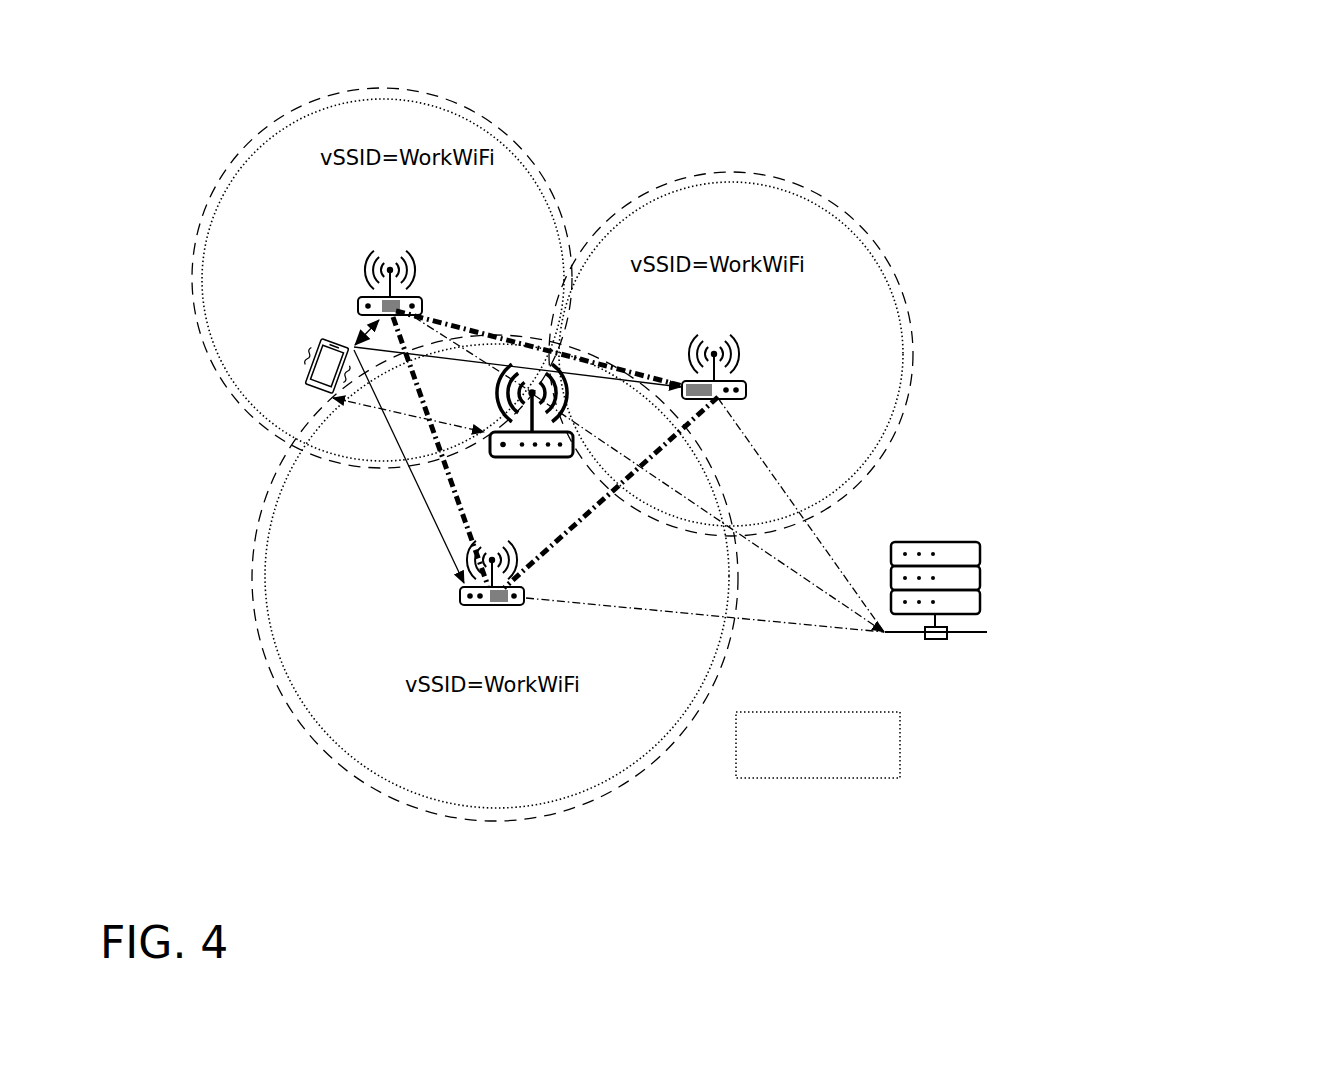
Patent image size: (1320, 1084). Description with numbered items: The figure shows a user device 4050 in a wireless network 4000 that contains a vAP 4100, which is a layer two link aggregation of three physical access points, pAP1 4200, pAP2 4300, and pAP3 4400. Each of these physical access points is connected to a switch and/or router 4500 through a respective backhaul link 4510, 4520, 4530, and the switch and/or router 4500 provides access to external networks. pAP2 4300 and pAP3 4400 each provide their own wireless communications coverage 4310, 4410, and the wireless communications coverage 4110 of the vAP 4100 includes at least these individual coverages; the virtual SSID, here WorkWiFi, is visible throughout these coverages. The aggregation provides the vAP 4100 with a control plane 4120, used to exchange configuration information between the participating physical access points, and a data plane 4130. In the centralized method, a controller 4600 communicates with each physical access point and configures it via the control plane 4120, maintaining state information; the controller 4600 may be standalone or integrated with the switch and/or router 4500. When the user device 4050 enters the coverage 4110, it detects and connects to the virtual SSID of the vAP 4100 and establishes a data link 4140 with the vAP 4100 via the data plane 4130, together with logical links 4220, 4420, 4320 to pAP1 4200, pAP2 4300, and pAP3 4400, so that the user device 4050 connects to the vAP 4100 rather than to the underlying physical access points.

The wireless network 4000 is at (1189, 98).
The user device 4050 is at (299, 371).
The vAP 4100 is at (437, 421).
The wireless communications coverage 4110 is at (373, 790).
The control plane 4120 is at (492, 333).
The data plane 4130 is at (610, 363).
The data link 4140 is at (1049, 517).
The pAP1 4200 is at (472, 253).
The logical link 4220 is at (334, 306).
The pAP2 4300 is at (796, 338).
The wireless communications coverage 4310 is at (875, 252).
The logical link 4320 is at (414, 543).
The pAP3 4400 is at (519, 639).
The wireless communications coverage 4410 is at (660, 695).
The logical link 4420 is at (627, 411).
The switch and/or router 4500 is at (1044, 595).
The backhaul link 4510 is at (696, 531).
The backhaul link 4520 is at (872, 471).
The backhaul link 4530 is at (664, 665).
The controller 4600 is at (818, 745).